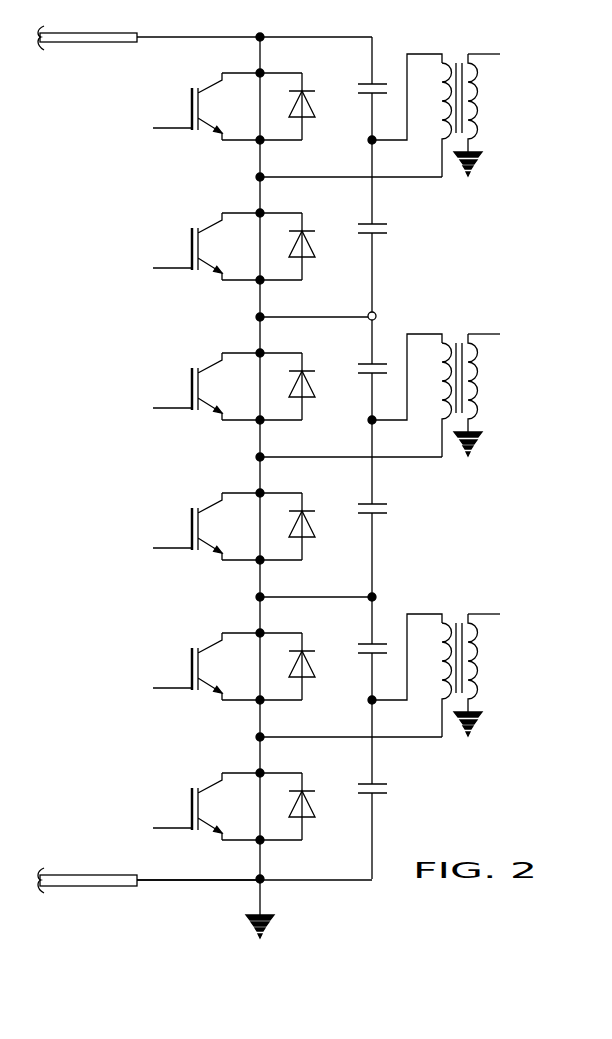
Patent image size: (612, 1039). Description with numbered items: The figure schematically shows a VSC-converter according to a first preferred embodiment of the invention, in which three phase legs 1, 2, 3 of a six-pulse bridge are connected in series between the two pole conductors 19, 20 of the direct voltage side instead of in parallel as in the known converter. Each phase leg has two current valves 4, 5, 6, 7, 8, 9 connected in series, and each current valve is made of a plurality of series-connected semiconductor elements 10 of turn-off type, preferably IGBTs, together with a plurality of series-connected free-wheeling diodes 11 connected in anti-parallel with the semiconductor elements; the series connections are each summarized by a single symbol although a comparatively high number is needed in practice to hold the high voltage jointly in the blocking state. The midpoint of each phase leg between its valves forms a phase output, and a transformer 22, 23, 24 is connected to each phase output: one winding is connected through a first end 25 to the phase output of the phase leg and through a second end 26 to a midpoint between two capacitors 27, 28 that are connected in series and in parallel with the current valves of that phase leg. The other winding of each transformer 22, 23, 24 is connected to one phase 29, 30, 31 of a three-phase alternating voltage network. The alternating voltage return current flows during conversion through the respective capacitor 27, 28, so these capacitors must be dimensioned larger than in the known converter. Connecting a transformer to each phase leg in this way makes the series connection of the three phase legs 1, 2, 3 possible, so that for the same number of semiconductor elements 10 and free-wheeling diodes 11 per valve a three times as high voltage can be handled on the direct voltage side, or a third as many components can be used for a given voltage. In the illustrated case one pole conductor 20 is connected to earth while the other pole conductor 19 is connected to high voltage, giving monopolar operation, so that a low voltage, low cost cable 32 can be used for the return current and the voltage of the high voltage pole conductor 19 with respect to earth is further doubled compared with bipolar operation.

The phase leg 1 is at (135, 180).
The phase leg 2 is at (304, 452).
The phase leg 3 is at (309, 714).
The current valve 4 is at (236, 72).
The current valve 5 is at (236, 212).
The current valve 6 is at (247, 374).
The current valve 7 is at (247, 514).
The current valve 8 is at (247, 654).
The current valve 9 is at (247, 794).
The semiconductor element of turn-off type 10 is at (190, 96).
The free-wheeling diode 11 is at (290, 103).
The pole conductor 19 is at (165, 37).
The pole conductor 20 is at (178, 880).
The transformer 22 is at (456, 62).
The transformer 23 is at (488, 380).
The transformer 24 is at (488, 660).
The first end 25 is at (258, 177).
The second end 26 is at (371, 140).
The capacitor 27 is at (360, 84).
The capacitor 28 is at (360, 224).
The phase of three-phase alternating voltage network 29 is at (500, 54).
The phase of three-phase alternating voltage network 30 is at (501, 350).
The phase of three-phase alternating voltage network 31 is at (501, 630).
The cable 32 is at (83, 875).